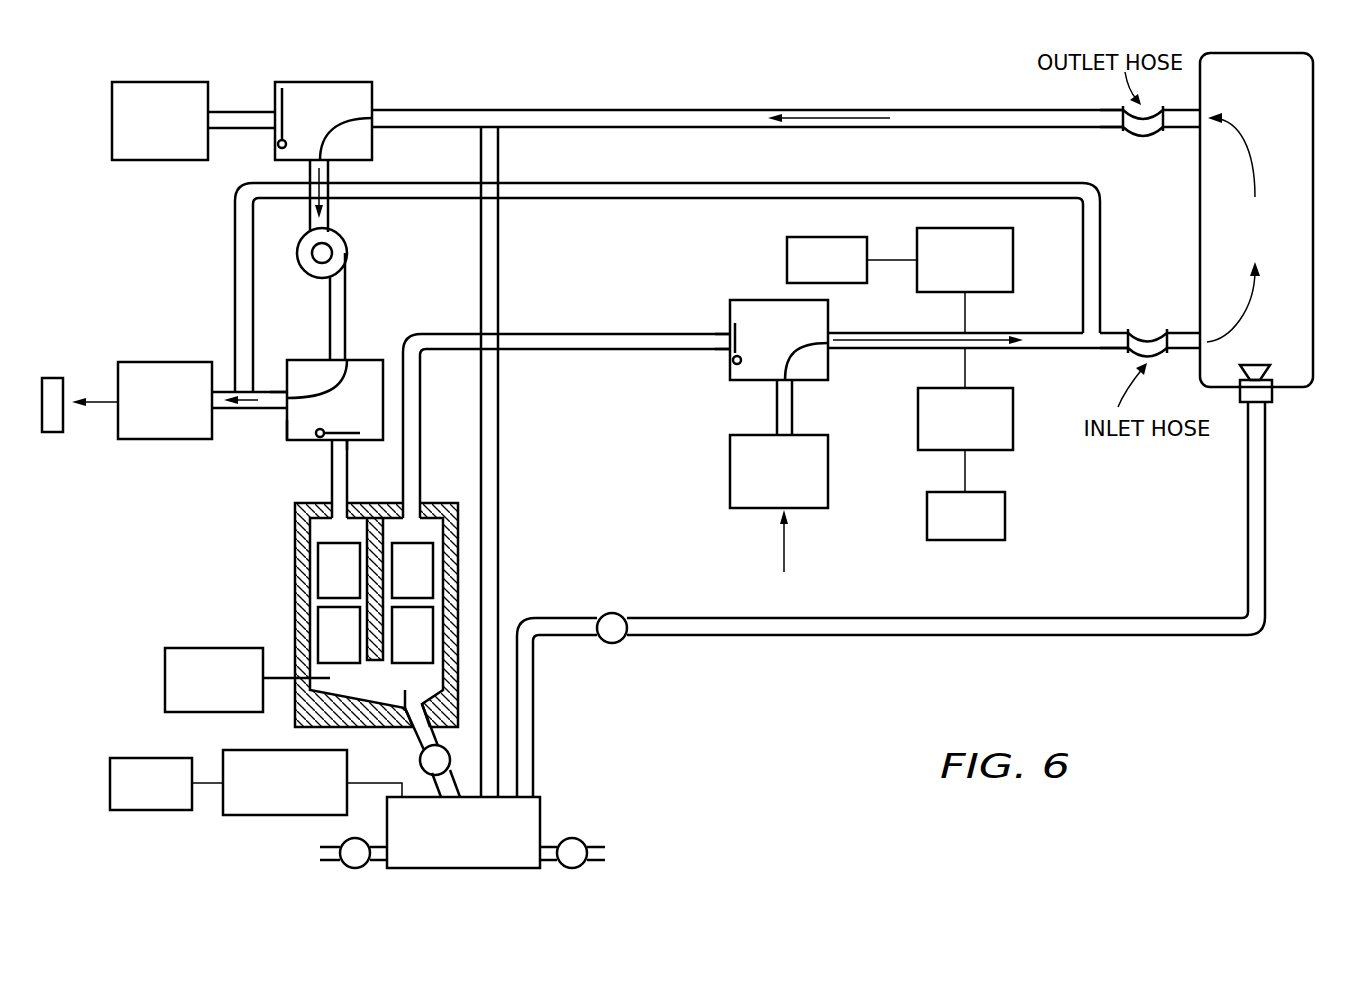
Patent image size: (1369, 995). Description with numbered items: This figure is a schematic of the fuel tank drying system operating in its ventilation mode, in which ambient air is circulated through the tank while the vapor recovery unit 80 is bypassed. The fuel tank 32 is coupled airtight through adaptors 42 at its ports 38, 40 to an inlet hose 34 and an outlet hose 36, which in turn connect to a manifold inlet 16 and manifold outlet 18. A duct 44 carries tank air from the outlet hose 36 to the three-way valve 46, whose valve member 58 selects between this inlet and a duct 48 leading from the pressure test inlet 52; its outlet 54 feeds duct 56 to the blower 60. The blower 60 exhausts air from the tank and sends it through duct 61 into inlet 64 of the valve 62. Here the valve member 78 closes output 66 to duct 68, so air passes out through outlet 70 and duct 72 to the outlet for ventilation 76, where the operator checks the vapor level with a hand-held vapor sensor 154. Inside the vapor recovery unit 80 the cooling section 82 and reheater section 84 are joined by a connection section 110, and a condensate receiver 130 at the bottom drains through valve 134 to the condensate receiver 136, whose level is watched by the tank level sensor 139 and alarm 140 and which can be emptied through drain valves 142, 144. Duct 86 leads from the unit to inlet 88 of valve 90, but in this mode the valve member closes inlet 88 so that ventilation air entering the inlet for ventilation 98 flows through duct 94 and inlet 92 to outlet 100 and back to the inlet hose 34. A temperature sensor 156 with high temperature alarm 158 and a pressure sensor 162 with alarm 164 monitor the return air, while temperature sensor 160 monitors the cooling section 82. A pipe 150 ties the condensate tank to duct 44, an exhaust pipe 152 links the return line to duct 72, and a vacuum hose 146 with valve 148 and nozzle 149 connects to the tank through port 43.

The manifold inlet 16 is at (1121, 119).
The manifold outlet 18 is at (1131, 333).
The fuel tank 32 is at (1290, 165).
The inlet hose 34 is at (1160, 352).
The outlet hose 36 is at (1147, 132).
The port 38 is at (1205, 344).
The port 40 is at (1231, 155).
The adaptors 42 is at (1168, 121).
The port 43 is at (1272, 402).
The duct 44 is at (918, 110).
The valve 46 is at (365, 102).
The duct 48 is at (237, 122).
The pressure test inlet 52 is at (173, 136).
The outlet 54 is at (330, 166).
The duct 56 is at (331, 221).
The valve member 58 is at (282, 88).
The blower 60 is at (331, 256).
The duct 61 is at (337, 296).
The valve 62 is at (286, 430).
The inlet 64 is at (362, 360).
The output 66 is at (348, 442).
The duct 68 is at (334, 473).
The outlet 70 is at (277, 392).
The duct 72 is at (222, 392).
The outlet for ventilation 76 is at (173, 416).
The valve member 78 is at (318, 438).
The vapor recovery unit 80 is at (470, 542).
The cooling section 82 is at (320, 572).
The reheater section 84 is at (427, 617).
The duct 86 is at (413, 403).
The inlet 88 is at (720, 333).
The valve 90 is at (740, 300).
The inlet 92 is at (729, 360).
The duct 94 is at (795, 405).
The inlet for ventilation 98 is at (768, 485).
The outlet 100 is at (832, 333).
The connection section 110 is at (340, 675).
The condensate receiver 130 is at (440, 692).
The valve 134 is at (450, 758).
The condensate receiver 136 is at (543, 822).
The tank level sensor 139 is at (240, 808).
The alarm 140 is at (140, 763).
The drain valve 142 is at (340, 848).
The drain valve 144 is at (580, 840).
The vacuum hose 146 is at (750, 636).
The valve 148 is at (622, 643).
The nozzle 149 is at (1268, 368).
The pipe 150 is at (492, 273).
The exhaust pipe 152 is at (660, 183).
The hand-held vapor sensor 154 is at (60, 378).
The temperature sensor 156 is at (1005, 250).
The high temperature alarm 158 is at (787, 243).
The temperature sensor 160 is at (172, 650).
The pressure sensor 162 is at (1013, 440).
The alarm 164 is at (1005, 528).